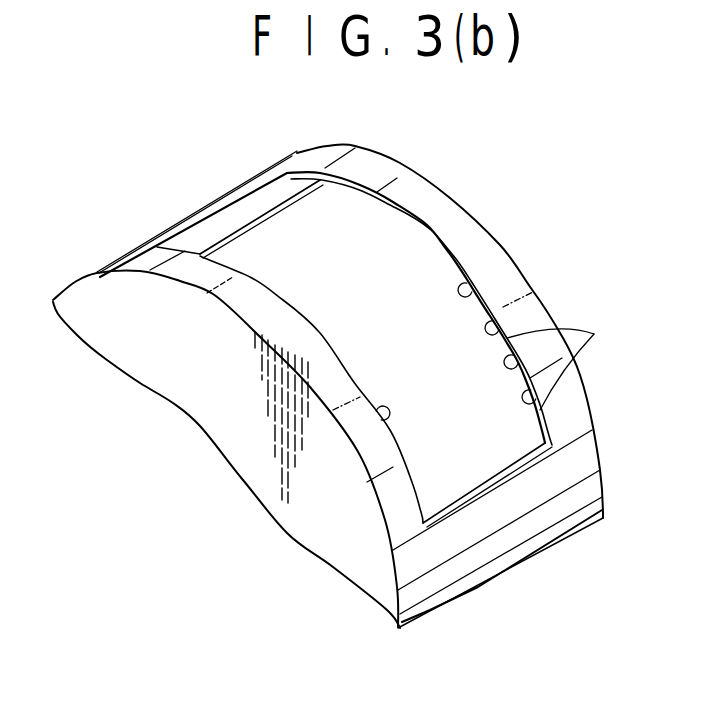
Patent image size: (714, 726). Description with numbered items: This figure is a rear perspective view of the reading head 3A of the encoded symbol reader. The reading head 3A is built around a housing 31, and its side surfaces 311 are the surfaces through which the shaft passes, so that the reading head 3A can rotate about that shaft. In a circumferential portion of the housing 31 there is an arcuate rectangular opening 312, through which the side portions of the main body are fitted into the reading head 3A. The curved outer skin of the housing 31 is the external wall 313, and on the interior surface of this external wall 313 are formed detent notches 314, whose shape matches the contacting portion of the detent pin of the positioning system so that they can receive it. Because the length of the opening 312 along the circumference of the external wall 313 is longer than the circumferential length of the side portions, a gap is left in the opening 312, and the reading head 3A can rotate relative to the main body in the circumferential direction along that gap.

The reading head 3A is at (180, 212).
The housing 31 is at (297, 157).
The side surface 311 is at (117, 313).
The arcuate rectangular opening 312 is at (398, 233).
The external wall 313 is at (472, 276).
The detent notch 314 is at (594, 334).